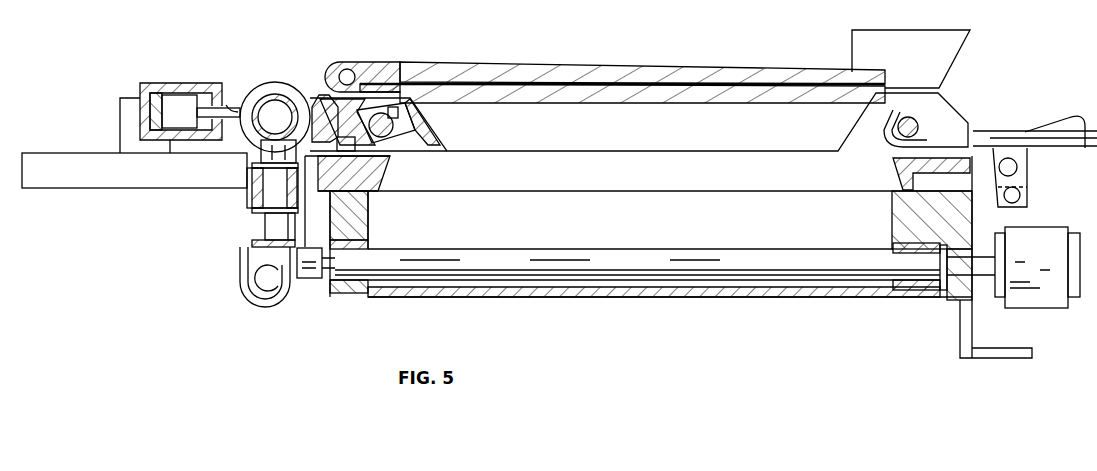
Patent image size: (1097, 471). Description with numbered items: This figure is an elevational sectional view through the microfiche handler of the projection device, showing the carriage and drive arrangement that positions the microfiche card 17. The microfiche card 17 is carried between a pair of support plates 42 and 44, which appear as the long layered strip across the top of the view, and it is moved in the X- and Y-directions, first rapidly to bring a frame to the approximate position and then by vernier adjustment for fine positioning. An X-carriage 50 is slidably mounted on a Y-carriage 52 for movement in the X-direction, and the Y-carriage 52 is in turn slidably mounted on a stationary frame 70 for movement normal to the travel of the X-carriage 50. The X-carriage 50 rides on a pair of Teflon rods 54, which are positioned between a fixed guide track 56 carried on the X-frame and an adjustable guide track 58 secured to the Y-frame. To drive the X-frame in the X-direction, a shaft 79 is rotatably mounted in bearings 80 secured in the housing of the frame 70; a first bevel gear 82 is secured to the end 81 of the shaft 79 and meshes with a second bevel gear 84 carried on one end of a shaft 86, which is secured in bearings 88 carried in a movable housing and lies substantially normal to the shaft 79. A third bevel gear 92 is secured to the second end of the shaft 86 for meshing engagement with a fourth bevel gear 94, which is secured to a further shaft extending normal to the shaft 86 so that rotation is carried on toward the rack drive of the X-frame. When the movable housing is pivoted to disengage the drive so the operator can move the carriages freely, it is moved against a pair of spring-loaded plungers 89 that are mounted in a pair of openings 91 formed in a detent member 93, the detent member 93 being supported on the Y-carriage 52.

The microfiche card 17 is at (444, 82).
The support plate 42 is at (504, 92).
The support plate 44 is at (606, 83).
The X-carriage 50 is at (928, 127).
The fixed guide track 56 is at (925, 131).
The adjustable guide track 58 is at (410, 127).
The Teflon rods 54 is at (383, 137).
The Y-carriage 52 is at (143, 185).
The stationary frame 70 is at (367, 234).
The bearings 80 is at (356, 290).
The shaft 79 is at (863, 272).
The end of shaft 81 is at (306, 280).
The first bevel gear 82 is at (292, 288).
The second bevel gear 84 is at (260, 245).
The shaft 86 is at (262, 224).
The bearings 88 is at (260, 193).
The third bevel gear 92 is at (255, 139).
The detent member 93 is at (168, 84).
The openings 91 is at (227, 105).
The spring-loaded plungers 89 is at (231, 110).
The fourth bevel gear 94 is at (290, 98).